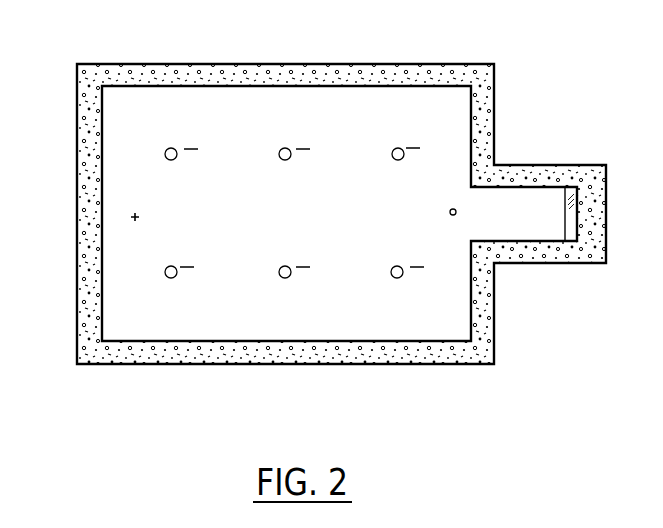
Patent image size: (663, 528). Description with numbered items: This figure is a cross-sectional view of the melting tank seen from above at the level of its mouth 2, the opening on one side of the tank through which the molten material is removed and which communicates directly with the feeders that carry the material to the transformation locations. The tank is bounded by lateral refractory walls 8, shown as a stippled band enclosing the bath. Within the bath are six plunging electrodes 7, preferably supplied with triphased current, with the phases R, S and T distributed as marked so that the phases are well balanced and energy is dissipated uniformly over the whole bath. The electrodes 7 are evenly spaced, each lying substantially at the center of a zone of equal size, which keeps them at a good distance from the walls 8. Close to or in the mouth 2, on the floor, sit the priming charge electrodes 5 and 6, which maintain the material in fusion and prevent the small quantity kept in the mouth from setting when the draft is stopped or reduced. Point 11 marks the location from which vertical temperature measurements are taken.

The mouth 2 is at (494, 228).
The priming charge electrode 5 is at (450, 213).
The priming charge electrode 6 is at (529, 216).
The plunging electrodes 7 is at (171, 160).
The lateral refractory walls 8 is at (184, 70).
The point 11 is at (133, 215).